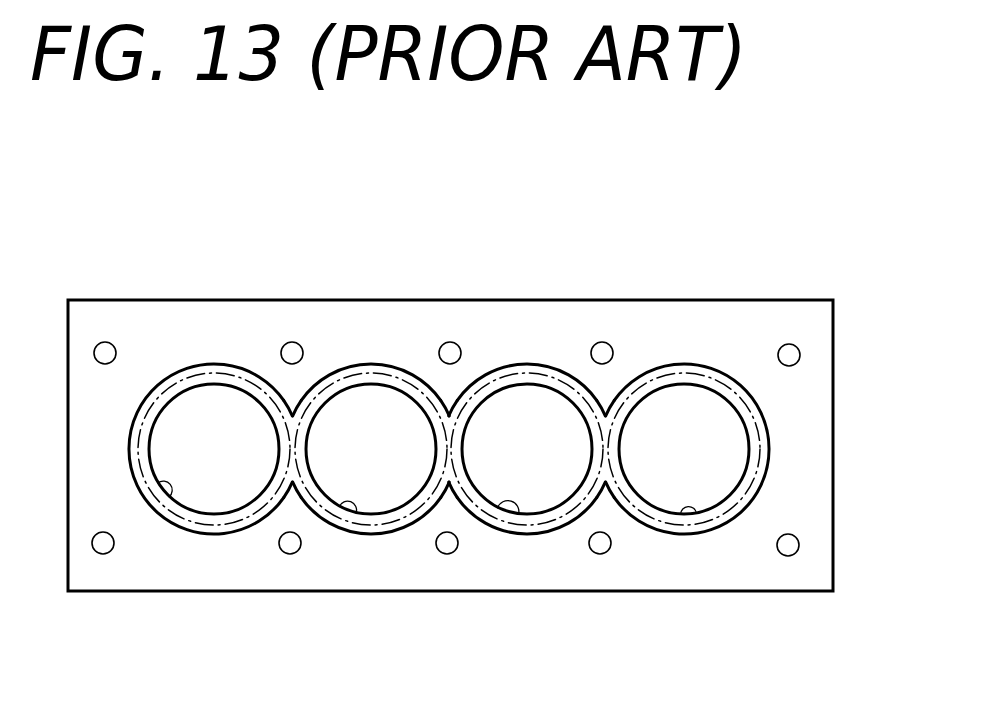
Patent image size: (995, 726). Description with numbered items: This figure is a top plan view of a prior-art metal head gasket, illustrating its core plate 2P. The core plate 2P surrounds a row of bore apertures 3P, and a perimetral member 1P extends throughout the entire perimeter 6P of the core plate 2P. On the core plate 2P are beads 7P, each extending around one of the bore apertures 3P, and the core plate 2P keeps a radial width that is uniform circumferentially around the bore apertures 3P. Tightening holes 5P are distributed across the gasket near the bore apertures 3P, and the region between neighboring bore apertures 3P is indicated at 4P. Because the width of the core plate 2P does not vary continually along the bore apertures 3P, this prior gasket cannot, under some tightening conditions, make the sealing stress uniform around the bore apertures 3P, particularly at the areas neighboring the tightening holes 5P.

The perimetral member 1P is at (717, 338).
The core plate 2P is at (763, 453).
The bore apertures 3P is at (176, 485).
The bridge portion between cylinder bores 4P is at (293, 411).
The tightening holes 5P is at (105, 342).
The perimeter 6P is at (755, 500).
The beads 7P is at (528, 371).